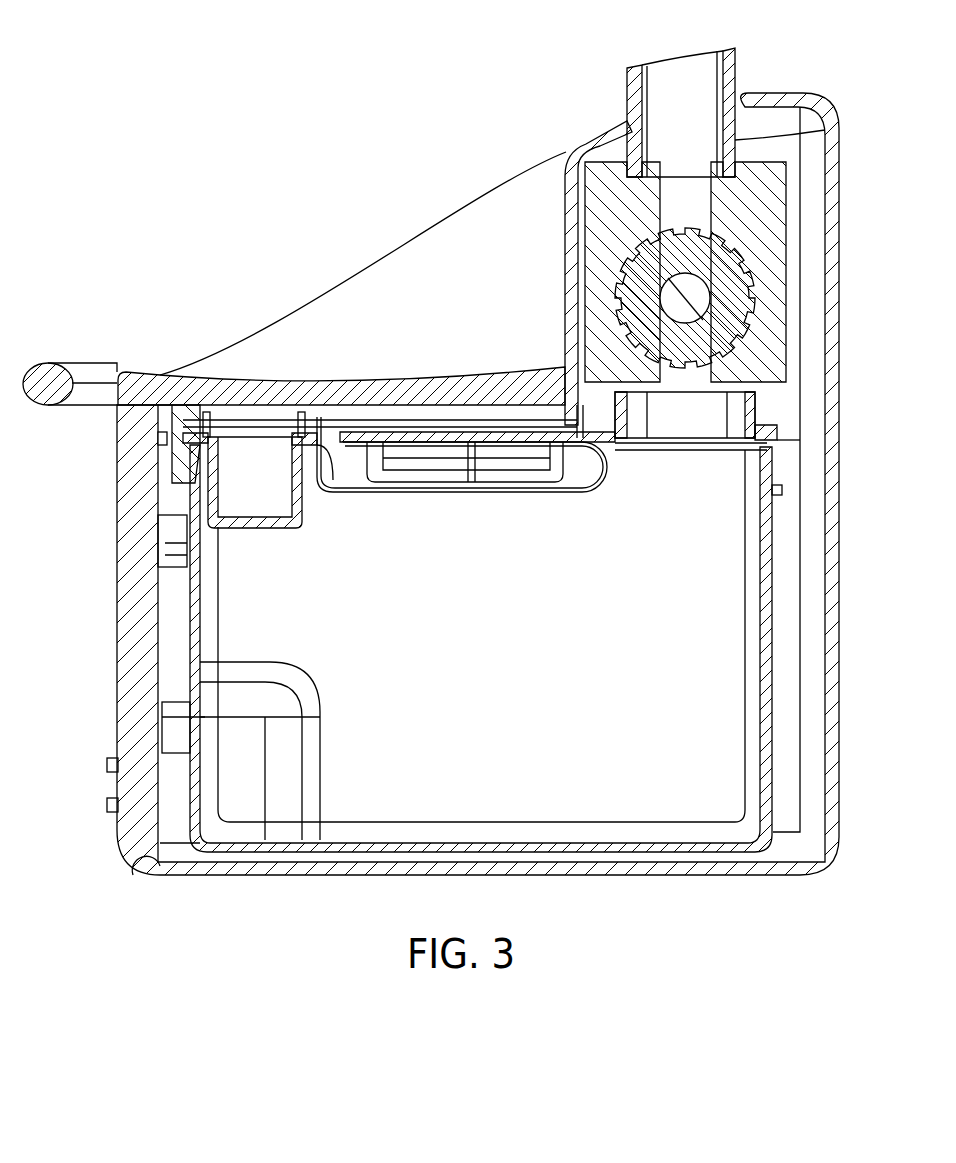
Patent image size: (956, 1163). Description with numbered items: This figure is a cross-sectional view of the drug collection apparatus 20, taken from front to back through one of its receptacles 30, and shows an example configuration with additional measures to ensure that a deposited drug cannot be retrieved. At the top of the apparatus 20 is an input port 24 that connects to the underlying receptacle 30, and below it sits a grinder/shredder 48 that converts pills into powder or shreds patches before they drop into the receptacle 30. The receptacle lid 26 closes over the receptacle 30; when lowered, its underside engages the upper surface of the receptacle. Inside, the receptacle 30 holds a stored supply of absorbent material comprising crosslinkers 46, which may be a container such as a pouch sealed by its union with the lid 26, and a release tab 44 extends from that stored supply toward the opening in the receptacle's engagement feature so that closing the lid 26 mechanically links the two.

The collection apparatus 20 is at (230, 71).
The input port 24 is at (675, 88).
The receptacle lid 26 is at (193, 388).
The receptacle 30 is at (770, 648).
The release tab 44 is at (533, 488).
The absorbent material comprising crosslinkers 46 is at (435, 454).
The grinder/shredder 48 is at (735, 309).